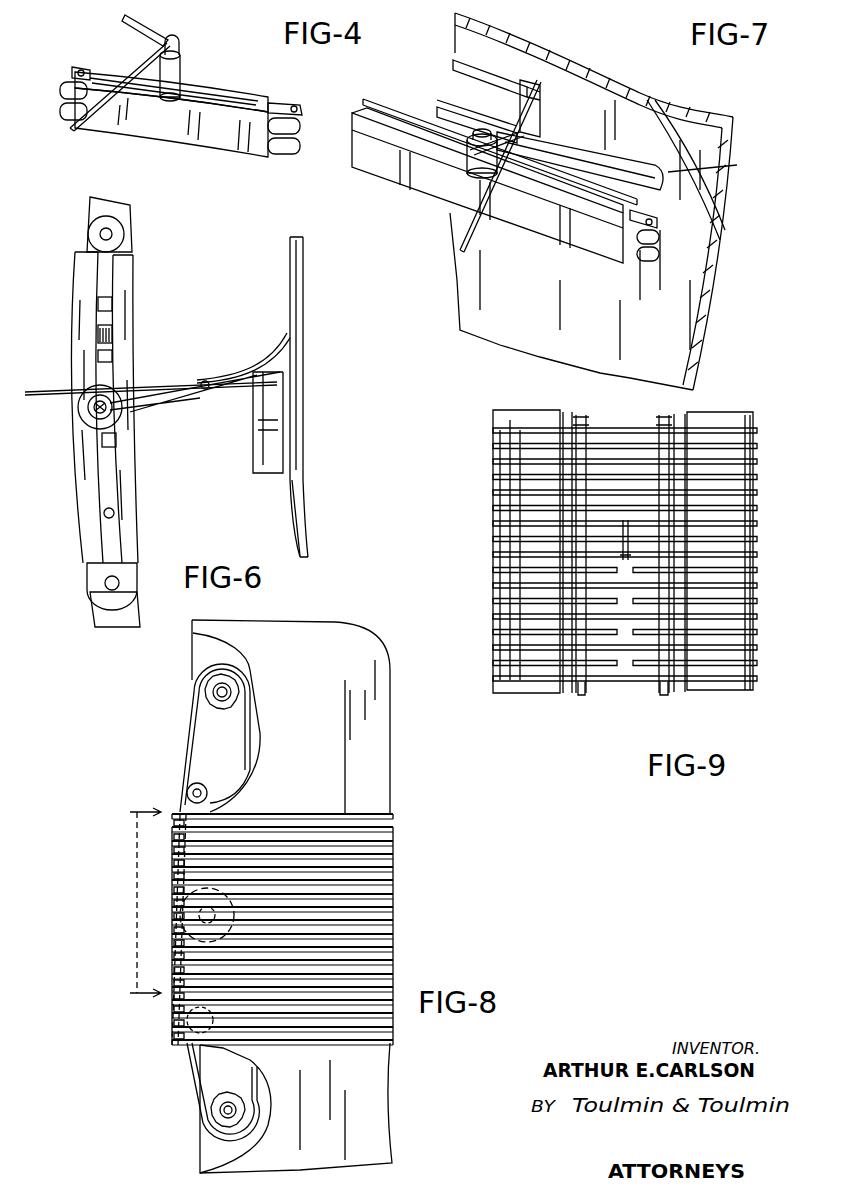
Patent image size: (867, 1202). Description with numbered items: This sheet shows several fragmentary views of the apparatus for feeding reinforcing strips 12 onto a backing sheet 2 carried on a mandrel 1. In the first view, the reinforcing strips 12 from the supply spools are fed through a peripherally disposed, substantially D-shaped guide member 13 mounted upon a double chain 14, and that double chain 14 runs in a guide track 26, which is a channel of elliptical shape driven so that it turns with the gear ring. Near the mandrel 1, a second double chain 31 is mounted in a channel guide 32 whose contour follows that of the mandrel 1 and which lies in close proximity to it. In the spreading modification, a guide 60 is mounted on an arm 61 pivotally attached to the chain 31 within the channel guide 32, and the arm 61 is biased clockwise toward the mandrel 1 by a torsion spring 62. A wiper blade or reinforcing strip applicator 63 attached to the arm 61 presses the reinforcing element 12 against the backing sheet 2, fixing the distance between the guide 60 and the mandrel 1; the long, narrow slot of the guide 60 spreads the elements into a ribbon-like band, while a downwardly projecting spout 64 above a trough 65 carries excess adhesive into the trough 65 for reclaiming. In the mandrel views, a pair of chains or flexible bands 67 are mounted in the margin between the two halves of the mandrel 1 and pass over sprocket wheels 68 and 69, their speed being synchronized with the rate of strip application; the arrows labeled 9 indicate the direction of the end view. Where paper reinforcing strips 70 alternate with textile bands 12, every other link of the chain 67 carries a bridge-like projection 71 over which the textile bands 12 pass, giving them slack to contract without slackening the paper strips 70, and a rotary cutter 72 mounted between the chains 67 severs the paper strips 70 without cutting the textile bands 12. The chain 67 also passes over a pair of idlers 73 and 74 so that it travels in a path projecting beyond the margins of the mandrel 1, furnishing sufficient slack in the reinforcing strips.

In FIG. 6, the mandrel 1 is at (305, 300).
In FIG. 7, the mandrel 1 is at (703, 110).
In FIG. 9, the mandrel 1 is at (568, 412).
In FIG. 8, the mandrel 1 is at (200, 643).
In FIG. 6, the backing sheet 2 is at (292, 496).
In FIG. 7, the backing sheet 2 is at (650, 118).
In FIG. 9, the backing sheet 2 is at (510, 410).
In FIG. 8, the backing sheet 2 is at (340, 633).
In FIG. 8, the section line 9— 9 is at (138, 903).
In FIG. 4, the reinforcing strips 12 is at (72, 131).
In FIG. 6, the reinforcing strips 12 is at (55, 390).
In FIG. 7, the reinforcing strips 12 is at (490, 77).
In FIG. 9, the reinforcing strips 12 is at (493, 448).
In FIG. 8, the reinforcing strips 12 is at (392, 814).
In FIG. 4, the D-shaped guide member 13 is at (180, 42).
In FIG. 4, the double chain 14 is at (292, 106).
In FIG. 4, the guide track 26 is at (157, 135).
In FIG. 6, the double chain 31 is at (131, 212).
In FIG. 7, the double chain 31 is at (650, 260).
In FIG. 6, the channel guide 32 is at (138, 490).
In FIG. 7, the channel guide 32 is at (371, 165).
In FIG. 6, the guide 60 is at (284, 380).
In FIG. 7, the guide 60 is at (527, 100).
In FIG. 6, the arm 61 is at (180, 403).
In FIG. 7, the arm 61 is at (553, 93).
In FIG. 6, the torsion spring 62 is at (90, 414).
In FIG. 7, the torsion spring 62 is at (452, 203).
In FIG. 6, the wiper blade 63 is at (298, 352).
In FIG. 7, the wiper blade 63 is at (458, 81).
In FIG. 7, the spout 64 is at (540, 140).
In FIG. 6, the trough 65 is at (276, 440).
In FIG. 7, the trough 65 is at (634, 161).
In FIG. 9, the chains or flexible bands 67 is at (658, 692).
In FIG. 8, the chains or flexible bands 67 is at (193, 1070).
In FIG. 8, the sprocket wheel 68 is at (217, 1120).
In FIG. 8, the sprocket wheel 69 is at (200, 692).
In FIG. 8, the paper reinforcing strips 70 is at (395, 818).
In FIG. 9, the bridge-like projection 71 is at (662, 416).
In FIG. 8, the bridge-like projection 71 is at (177, 840).
In FIG. 9, the rotary cutter 72 is at (495, 523).
In FIG. 8, the rotary cutter 72 is at (180, 893).
In FIG. 8, the idler 73 is at (178, 1032).
In FIG. 8, the idler 74 is at (205, 785).